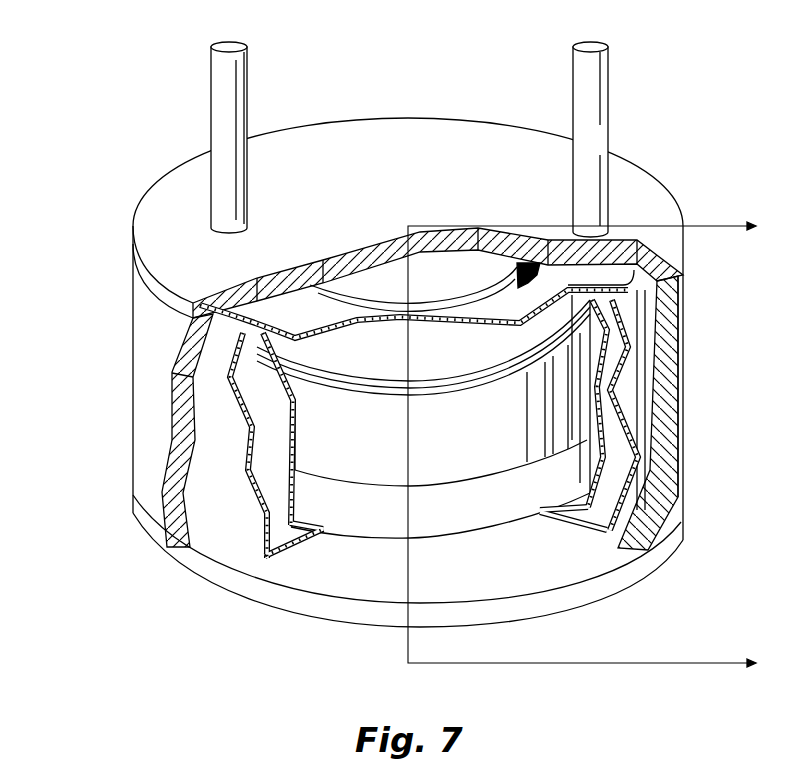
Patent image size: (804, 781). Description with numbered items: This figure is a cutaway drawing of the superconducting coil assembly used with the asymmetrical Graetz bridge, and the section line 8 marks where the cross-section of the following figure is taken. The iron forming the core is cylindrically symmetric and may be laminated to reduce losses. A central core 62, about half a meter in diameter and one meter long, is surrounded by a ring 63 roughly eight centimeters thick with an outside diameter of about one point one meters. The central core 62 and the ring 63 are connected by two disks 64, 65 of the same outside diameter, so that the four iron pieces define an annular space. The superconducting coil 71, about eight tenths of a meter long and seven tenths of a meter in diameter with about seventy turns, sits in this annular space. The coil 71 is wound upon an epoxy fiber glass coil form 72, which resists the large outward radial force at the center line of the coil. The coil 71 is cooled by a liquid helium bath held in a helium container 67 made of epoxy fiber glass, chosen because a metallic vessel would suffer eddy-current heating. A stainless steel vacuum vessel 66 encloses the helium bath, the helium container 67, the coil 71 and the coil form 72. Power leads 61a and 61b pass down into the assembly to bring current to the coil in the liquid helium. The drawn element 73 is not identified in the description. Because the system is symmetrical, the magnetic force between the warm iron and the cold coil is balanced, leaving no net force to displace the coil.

The section line 8— 8 is at (591, 445).
The power lead 61a is at (249, 60).
The power lead 61b is at (571, 54).
The central core 62 is at (385, 268).
The ring 63 is at (686, 300).
The disk 64 is at (652, 182).
The disk 65 is at (202, 590).
The vacuum vessel 66 is at (610, 532).
The helium container 67 is at (580, 505).
The superconducting coil 71 is at (347, 487).
The coil form 72 is at (292, 357).
The spring support 73 is at (192, 323).